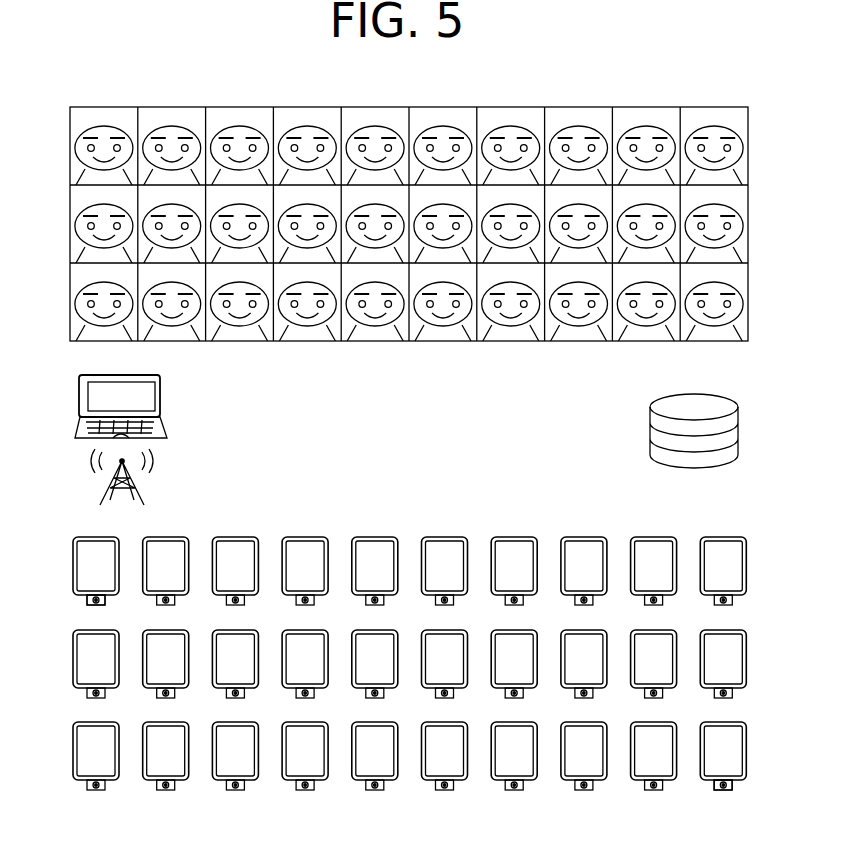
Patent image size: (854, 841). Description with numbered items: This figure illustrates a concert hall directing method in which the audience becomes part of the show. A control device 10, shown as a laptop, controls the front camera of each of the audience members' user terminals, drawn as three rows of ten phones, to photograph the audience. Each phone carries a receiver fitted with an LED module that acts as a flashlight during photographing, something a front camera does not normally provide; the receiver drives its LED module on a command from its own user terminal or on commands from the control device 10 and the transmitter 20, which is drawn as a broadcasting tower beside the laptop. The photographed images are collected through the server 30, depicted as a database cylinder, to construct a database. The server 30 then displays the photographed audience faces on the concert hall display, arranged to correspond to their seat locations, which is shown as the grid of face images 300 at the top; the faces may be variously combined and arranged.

The control device 10 is at (162, 397).
The transmitter 20 is at (152, 487).
The server 30 is at (650, 442).
The face image set 300 is at (442, 342).